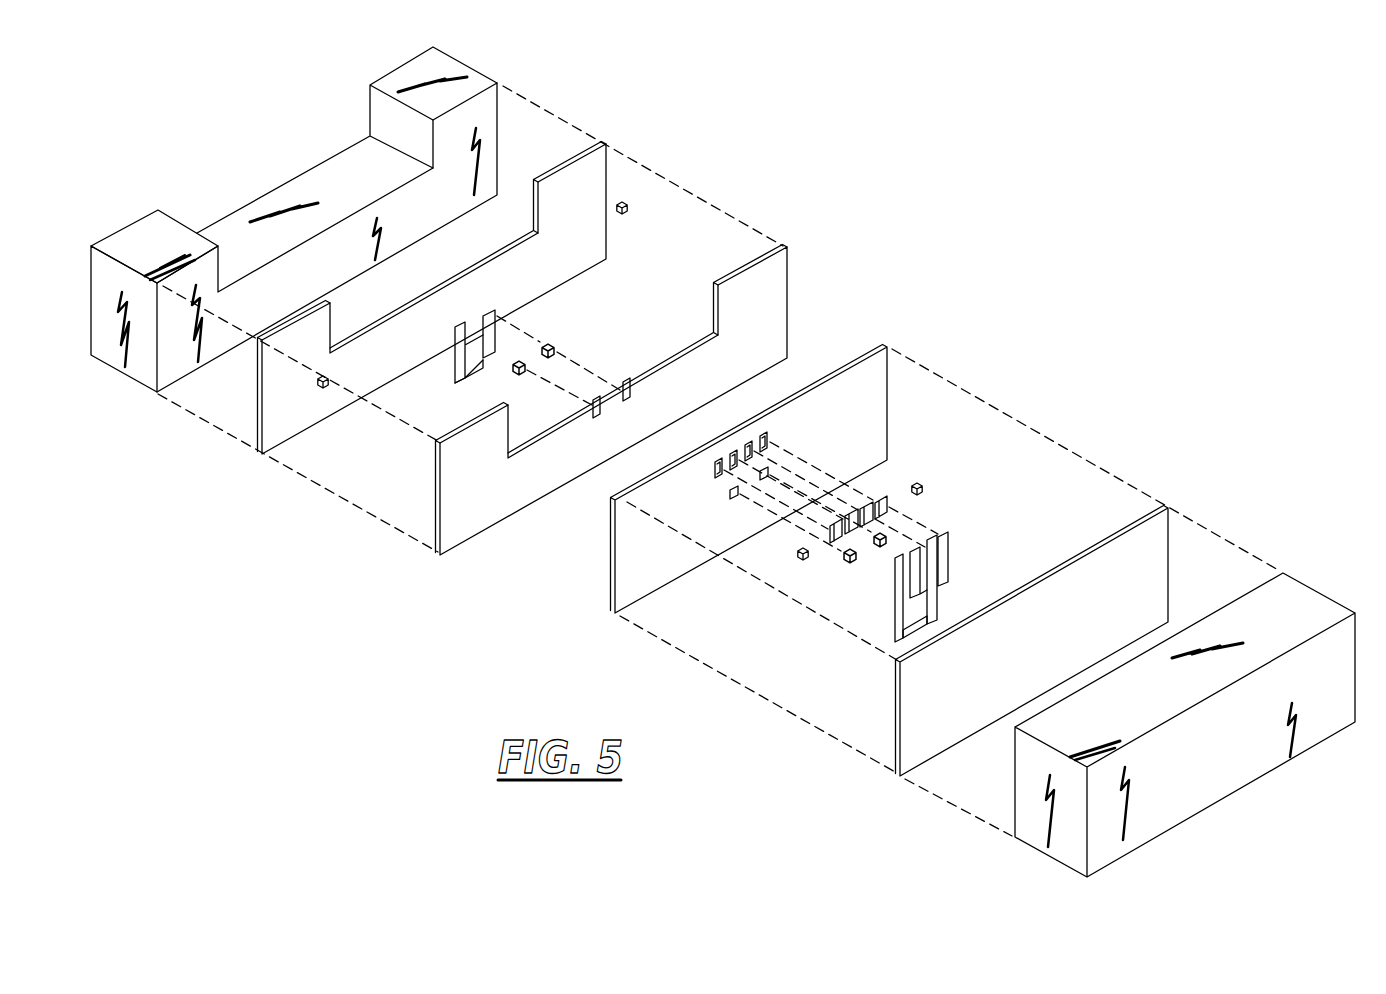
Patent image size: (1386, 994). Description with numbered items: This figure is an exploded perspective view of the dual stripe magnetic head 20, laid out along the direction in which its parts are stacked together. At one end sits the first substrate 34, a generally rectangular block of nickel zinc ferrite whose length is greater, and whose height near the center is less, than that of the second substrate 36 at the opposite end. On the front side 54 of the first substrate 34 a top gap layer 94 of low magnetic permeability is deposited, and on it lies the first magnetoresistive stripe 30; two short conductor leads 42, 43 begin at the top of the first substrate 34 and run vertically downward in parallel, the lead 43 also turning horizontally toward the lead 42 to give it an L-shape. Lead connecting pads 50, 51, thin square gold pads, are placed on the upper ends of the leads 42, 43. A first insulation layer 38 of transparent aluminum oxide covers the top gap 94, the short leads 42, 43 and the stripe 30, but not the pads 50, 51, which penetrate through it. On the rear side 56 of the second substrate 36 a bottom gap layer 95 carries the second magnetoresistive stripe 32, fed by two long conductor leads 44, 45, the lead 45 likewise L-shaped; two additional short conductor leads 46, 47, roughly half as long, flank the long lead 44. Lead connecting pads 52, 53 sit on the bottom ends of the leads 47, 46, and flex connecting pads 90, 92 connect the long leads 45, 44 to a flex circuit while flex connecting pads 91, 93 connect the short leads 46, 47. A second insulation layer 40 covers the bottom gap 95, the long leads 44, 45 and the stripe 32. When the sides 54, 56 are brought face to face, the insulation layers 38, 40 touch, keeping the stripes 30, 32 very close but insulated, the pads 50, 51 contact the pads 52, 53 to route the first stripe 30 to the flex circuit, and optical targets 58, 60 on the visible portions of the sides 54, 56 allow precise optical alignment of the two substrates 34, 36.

The dual stripe magnetic head 20 is at (1095, 218).
The first magnetoresistive stripe 30 is at (468, 370).
The second magnetoresistive stripe 32 is at (942, 630).
The first substrate 34 is at (152, 230).
The second substrate 36 is at (1297, 590).
The first insulation layer 38 is at (777, 272).
The second insulation layer 40 is at (635, 570).
The short conductor lead 42 is at (455, 350).
The short conductor lead 43 is at (493, 325).
The long conductor lead 44 is at (940, 530).
The long conductor lead 45 is at (895, 622).
The short conductor lead 46 is at (923, 590).
The short conductor lead 47 is at (943, 552).
The lead connecting pad 50 is at (520, 360).
The lead connecting pad 51 is at (553, 345).
The lead connecting pad 52 is at (887, 537).
The lead connecting pad 53 is at (845, 560).
The front side 54 is at (598, 167).
The rear side 56 is at (1138, 523).
The optical target 58 is at (628, 210).
The optical target 60 is at (922, 487).
The flex connecting pad 90 is at (837, 520).
The flex connecting pad 91 is at (865, 510).
The flex connecting pad 92 is at (877, 503).
The flex connecting pad 93 is at (890, 497).
The top gap layer 94 is at (262, 427).
The bottom gap layer 95 is at (1177, 554).